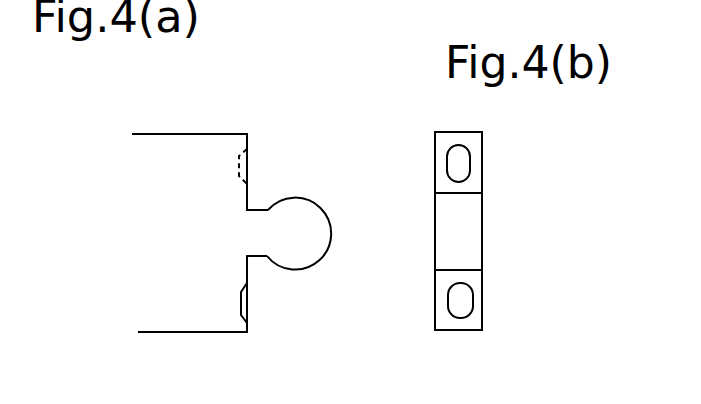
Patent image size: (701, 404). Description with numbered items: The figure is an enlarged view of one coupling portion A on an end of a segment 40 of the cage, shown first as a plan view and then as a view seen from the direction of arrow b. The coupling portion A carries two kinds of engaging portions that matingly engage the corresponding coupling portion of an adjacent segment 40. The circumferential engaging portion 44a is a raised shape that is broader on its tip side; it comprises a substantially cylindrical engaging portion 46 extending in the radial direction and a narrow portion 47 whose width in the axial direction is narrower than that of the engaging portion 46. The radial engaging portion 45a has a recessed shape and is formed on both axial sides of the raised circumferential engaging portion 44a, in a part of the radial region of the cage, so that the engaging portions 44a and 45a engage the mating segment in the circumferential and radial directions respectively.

In FIG. 4A, the segment 40 is at (154, 157).
In FIG. 4B, the segment 40 is at (482, 300).
In FIG. 4A, the circumferential engaging portion 44a is at (321, 198).
In FIG. 4B, the circumferential engaging portion 44a is at (463, 239).
In FIG. 4A, the radial engaging portion 45a is at (254, 164).
In FIG. 4B, the radial engaging portion 45a is at (455, 170).
In FIG. 4A, the engaging portion 46 is at (302, 250).
In FIG. 4B, the engaging portion 46 is at (448, 250).
In FIG. 4A, the narrow portion 47 is at (257, 242).
In FIG. 4A, the coupling portion A is at (339, 105).
In FIG. 4A, the arrow b is at (352, 228).